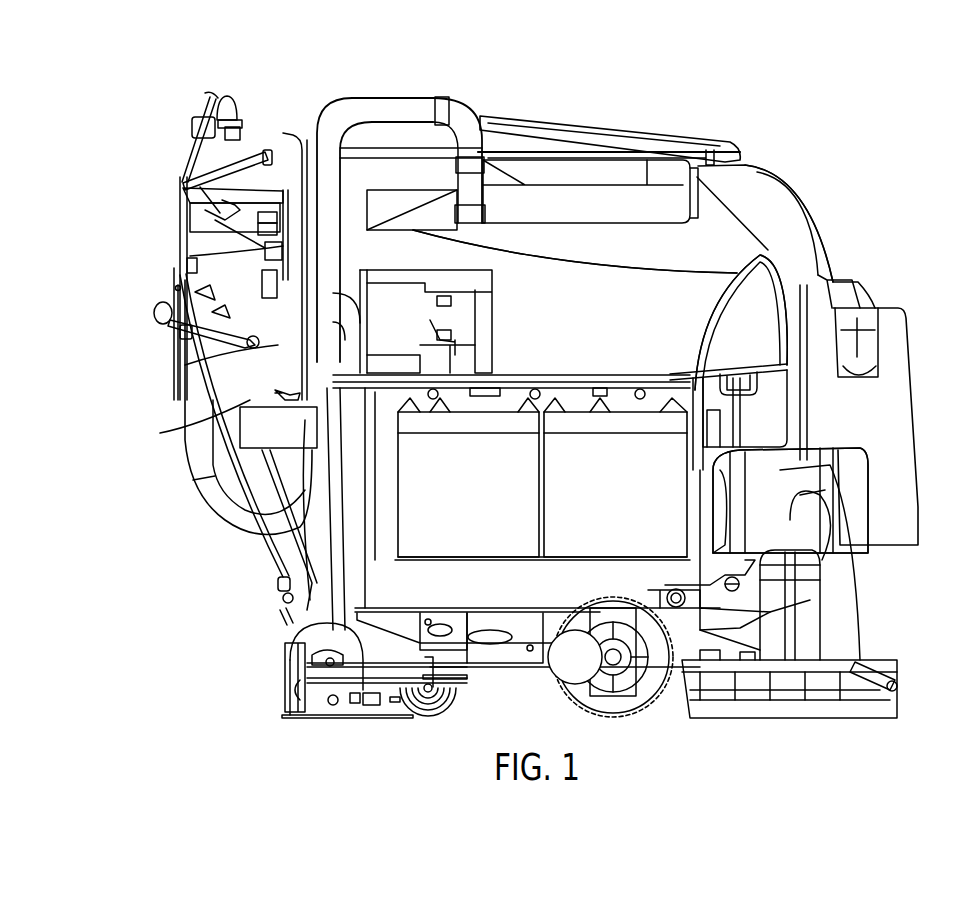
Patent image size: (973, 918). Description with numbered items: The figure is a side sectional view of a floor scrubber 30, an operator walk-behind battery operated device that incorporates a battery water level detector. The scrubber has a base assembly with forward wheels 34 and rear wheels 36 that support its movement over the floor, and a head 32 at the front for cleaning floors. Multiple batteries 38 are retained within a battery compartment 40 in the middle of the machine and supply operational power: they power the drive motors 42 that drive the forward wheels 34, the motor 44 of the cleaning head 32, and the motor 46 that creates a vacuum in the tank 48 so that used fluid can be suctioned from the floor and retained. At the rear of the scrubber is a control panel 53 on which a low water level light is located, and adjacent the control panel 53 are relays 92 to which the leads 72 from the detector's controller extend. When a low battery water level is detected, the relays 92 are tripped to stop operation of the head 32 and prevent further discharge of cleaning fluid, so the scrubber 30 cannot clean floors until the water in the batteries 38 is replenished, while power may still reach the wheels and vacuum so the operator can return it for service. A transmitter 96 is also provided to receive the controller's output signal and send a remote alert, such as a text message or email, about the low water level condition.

The floor scrubber 30 is at (367, 45).
The leads 72 is at (283, 133).
The transmitter 96 is at (175, 248).
The control panel 53 is at (178, 288).
The relays 92 is at (270, 350).
The motor 46 is at (435, 300).
The battery compartment 40 is at (687, 390).
The tank 48 is at (668, 258).
The batteries 38 is at (439, 545).
The motor 44 is at (805, 620).
The head 32 is at (880, 665).
The forward wheels 34 is at (636, 705).
The drive motors 42 is at (578, 655).
The rear wheels 36 is at (445, 708).